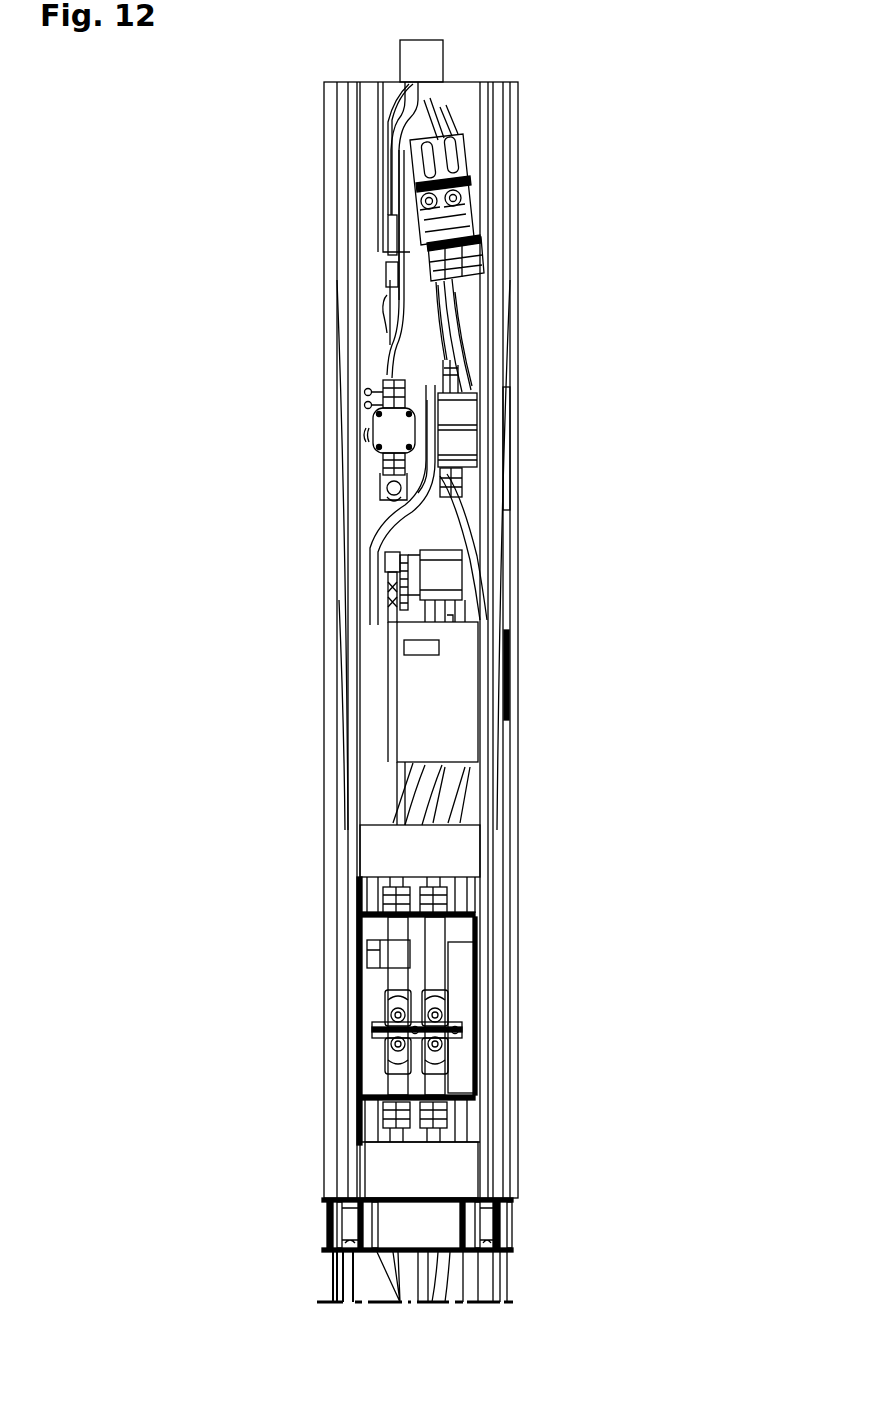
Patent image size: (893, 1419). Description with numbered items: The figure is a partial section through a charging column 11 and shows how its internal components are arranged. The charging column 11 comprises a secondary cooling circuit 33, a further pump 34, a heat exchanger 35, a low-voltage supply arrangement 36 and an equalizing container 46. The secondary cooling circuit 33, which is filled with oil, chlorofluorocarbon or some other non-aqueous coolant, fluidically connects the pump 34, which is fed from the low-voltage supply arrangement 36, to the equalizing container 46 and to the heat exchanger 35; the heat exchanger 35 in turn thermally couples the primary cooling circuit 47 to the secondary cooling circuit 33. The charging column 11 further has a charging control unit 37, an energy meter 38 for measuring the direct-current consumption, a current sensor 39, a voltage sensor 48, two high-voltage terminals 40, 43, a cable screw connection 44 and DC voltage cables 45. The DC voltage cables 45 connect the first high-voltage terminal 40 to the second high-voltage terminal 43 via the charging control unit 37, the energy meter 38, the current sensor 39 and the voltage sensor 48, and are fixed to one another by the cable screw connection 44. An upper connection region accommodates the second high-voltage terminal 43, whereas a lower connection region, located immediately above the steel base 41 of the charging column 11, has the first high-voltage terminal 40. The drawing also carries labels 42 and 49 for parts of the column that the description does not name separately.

The charging column 11 is at (150, 152).
The secondary cooling circuit 33 is at (365, 271).
The further pump 34 is at (390, 433).
The heat exchanger 35 is at (364, 477).
The low-voltage supply arrangement 36 is at (398, 575).
The charging control unit 37 is at (395, 611).
The energy meter 38 is at (420, 708).
The current sensor 39 is at (374, 952).
The first high-voltage terminal 40 is at (376, 1031).
The steel base 41 is at (374, 1218).
The top compartment 42 is at (470, 104).
The second high-voltage terminal 43 is at (466, 188).
The cable screw connection 44 is at (486, 262).
The DC voltage cables 45 is at (484, 320).
The equalizing container 46 is at (479, 412).
The primary cooling circuit 47 is at (445, 528).
The voltage sensor 48 is at (479, 970).
The tube fitting 49 is at (479, 1070).